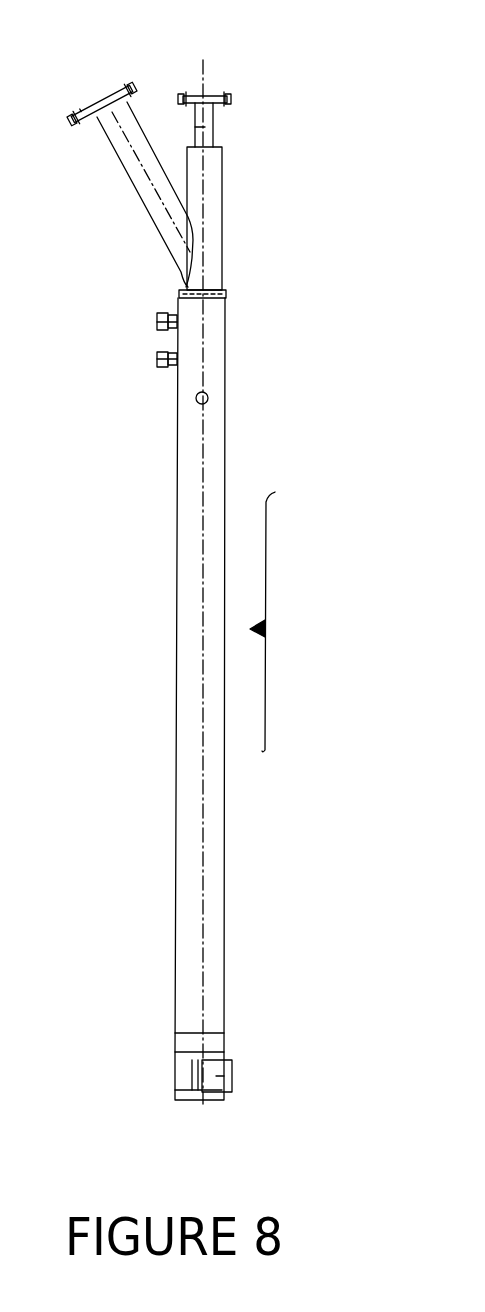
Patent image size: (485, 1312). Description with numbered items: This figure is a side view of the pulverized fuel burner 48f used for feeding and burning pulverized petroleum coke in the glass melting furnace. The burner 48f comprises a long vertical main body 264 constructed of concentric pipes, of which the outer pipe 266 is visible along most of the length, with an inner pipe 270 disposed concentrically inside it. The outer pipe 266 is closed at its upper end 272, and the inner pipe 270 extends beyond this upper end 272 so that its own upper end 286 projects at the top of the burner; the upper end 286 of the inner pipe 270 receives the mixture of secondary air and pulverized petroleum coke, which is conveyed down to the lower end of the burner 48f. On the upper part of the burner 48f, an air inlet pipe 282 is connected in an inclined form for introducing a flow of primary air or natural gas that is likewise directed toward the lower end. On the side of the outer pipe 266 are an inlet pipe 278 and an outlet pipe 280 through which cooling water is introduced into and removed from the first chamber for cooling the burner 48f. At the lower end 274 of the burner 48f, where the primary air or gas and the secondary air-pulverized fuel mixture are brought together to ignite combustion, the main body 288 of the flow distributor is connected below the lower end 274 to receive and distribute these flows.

The upper end of the inner pipe 286 is at (203, 96).
The inner pipe 270 is at (215, 126).
The upper end of the outer pipe 272 is at (232, 292).
The air inlet pipe 282 is at (108, 150).
The main body 264 is at (237, 913).
The outer pipe 266 is at (178, 540).
The burner 48f is at (278, 622).
The outlet pipe 280 is at (156, 322).
The inlet pipe 278 is at (156, 358).
The lower end of the burner 274 is at (227, 1047).
The main body of the flow distributor 288 is at (167, 1077).